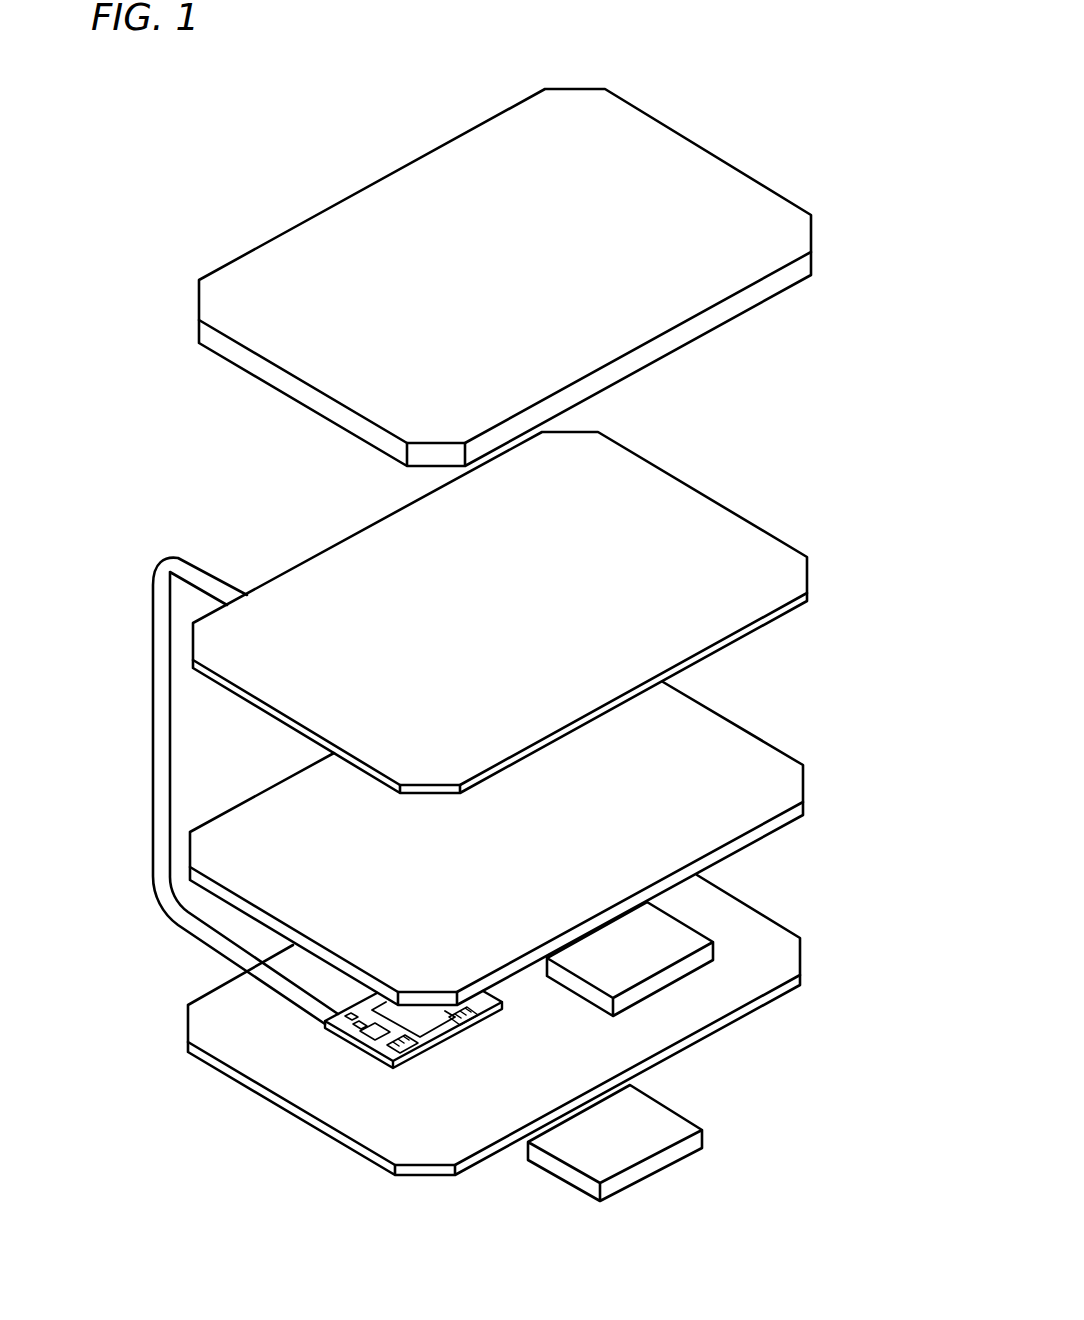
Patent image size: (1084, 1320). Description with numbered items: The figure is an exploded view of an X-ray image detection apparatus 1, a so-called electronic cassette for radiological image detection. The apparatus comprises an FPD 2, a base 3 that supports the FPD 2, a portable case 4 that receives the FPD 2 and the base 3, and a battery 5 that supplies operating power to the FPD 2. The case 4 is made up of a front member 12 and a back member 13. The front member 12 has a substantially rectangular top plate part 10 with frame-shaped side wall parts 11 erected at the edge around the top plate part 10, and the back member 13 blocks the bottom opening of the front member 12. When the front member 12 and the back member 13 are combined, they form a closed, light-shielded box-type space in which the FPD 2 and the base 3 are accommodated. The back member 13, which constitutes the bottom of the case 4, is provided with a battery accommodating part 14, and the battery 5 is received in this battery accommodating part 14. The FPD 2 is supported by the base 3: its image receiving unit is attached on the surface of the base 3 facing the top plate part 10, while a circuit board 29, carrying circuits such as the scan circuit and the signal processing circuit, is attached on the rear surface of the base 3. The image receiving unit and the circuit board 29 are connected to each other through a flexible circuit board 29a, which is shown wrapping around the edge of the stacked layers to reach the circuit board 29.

The X-ray image detection apparatus 1 is at (846, 99).
The FPD 2 is at (327, 547).
The base 3 is at (257, 790).
The portable case 4 is at (554, 628).
The battery 5 is at (543, 1173).
The top plate part 10 is at (663, 151).
The side wall parts 11 is at (722, 318).
The front member 12 is at (815, 263).
The back member 13 is at (803, 928).
The battery accommodating part 14 is at (685, 967).
The circuit board 29 is at (357, 1048).
The flexible circuit board 29a is at (153, 783).